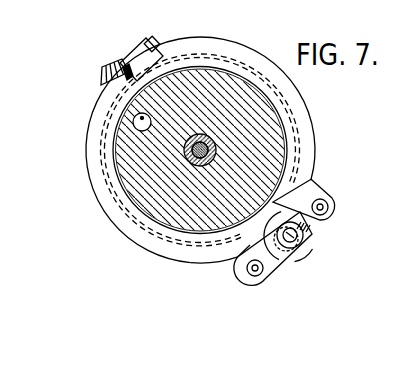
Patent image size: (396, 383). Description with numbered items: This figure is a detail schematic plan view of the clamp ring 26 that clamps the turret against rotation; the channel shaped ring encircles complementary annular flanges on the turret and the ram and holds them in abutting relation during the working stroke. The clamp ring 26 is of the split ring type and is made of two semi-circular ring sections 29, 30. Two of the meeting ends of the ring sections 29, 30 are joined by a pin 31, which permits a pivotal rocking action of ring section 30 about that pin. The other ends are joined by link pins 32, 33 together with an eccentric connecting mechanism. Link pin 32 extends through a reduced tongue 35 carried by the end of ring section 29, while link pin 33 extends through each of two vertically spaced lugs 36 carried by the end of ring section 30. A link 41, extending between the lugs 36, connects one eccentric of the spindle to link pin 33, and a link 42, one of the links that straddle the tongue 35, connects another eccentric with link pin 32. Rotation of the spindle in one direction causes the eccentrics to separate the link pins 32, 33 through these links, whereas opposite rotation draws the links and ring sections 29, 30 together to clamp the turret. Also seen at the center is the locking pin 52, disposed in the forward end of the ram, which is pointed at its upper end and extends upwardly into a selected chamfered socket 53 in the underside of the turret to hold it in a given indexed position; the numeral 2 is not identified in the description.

The pipe 2 is at (46, 0).
The clamp ring 26 is at (199, 163).
The ring section 29 is at (90, 133).
The ring section 30 is at (312, 126).
The pin 31 is at (127, 71).
The link pin 32 is at (272, 274).
The link pin 33 is at (307, 223).
The tongue 35 is at (226, 262).
The lugs 36 is at (321, 186).
The link 41 is at (313, 240).
The link 42 is at (239, 268).
The locking pin 52 is at (133, 114).
The socket 53 is at (137, 127).